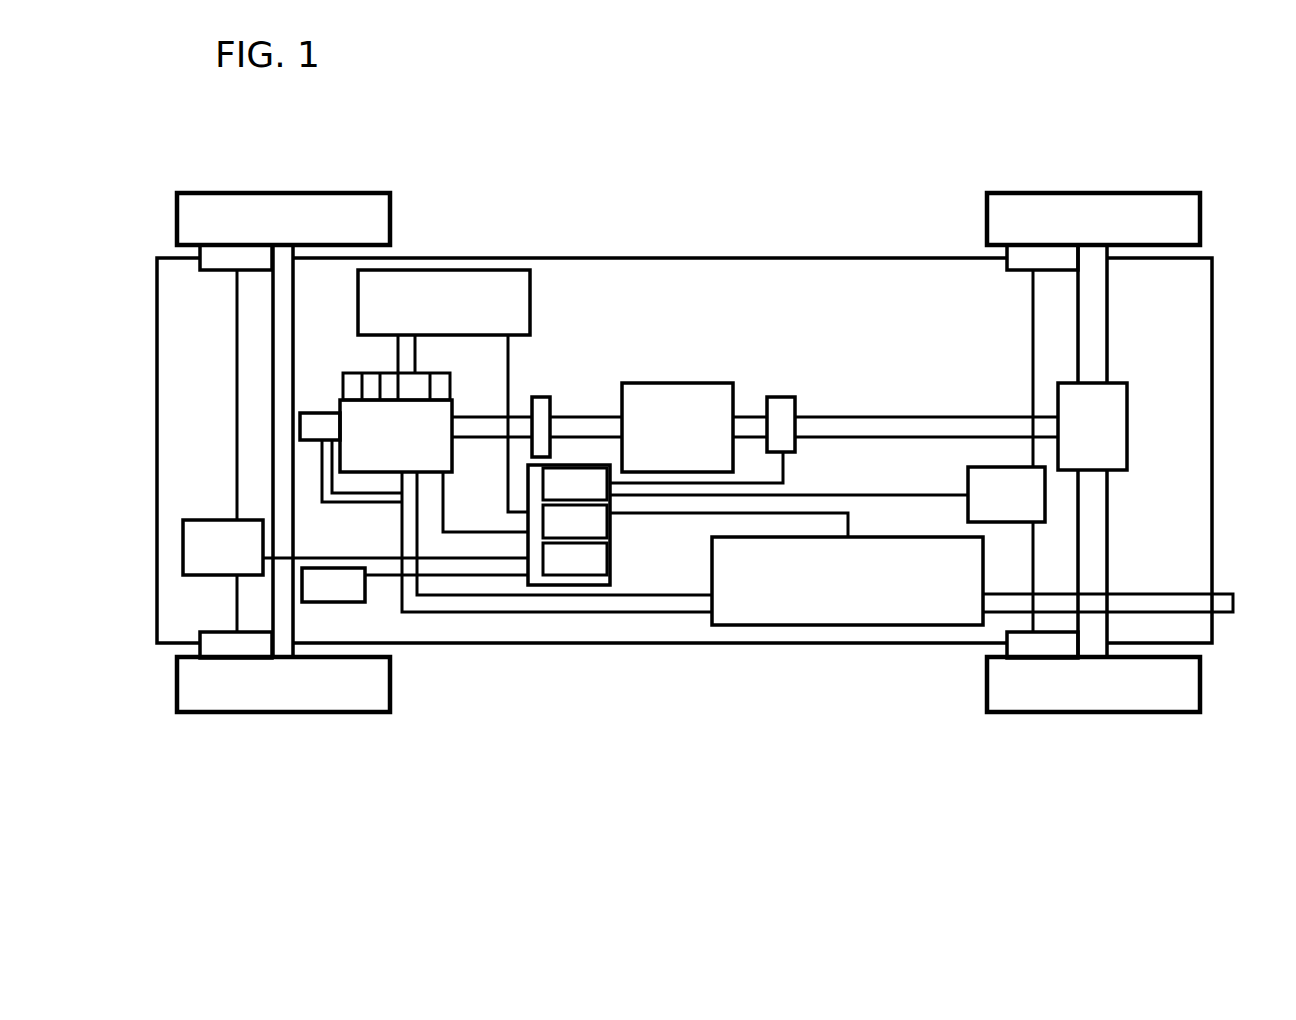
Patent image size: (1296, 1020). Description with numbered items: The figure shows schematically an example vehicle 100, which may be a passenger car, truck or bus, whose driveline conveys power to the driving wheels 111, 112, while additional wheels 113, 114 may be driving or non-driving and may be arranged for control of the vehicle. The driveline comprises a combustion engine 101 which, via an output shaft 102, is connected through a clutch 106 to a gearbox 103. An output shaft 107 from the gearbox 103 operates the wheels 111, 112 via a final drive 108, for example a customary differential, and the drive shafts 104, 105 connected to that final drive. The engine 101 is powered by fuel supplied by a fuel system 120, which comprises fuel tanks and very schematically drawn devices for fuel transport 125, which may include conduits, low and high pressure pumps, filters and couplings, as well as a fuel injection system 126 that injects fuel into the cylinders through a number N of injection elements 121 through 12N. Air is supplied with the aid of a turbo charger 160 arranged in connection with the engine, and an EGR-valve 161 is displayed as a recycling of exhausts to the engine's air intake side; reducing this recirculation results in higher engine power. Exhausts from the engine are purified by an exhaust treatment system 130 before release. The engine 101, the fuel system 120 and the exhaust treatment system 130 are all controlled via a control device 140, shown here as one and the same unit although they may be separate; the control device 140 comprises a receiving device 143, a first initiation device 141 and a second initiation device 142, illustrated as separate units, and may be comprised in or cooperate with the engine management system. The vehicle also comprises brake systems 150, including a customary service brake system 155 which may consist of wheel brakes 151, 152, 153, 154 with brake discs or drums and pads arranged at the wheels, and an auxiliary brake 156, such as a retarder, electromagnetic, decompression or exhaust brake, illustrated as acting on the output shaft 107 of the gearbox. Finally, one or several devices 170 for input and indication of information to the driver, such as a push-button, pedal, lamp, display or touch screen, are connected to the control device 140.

The vehicle 100 is at (597, 100).
The combustion engine 101 is at (375, 472).
The output shaft 102 is at (480, 417).
The gearbox 103 is at (681, 390).
The drive shaft 104 is at (1108, 310).
The drive shaft 105 is at (1108, 568).
The clutch 106 is at (541, 408).
The output shaft 107 is at (838, 417).
The final drive 108 is at (1128, 420).
The driving wheel 111 is at (1201, 684).
The driving wheel 112 is at (1201, 208).
The additional wheel 113 is at (392, 208).
The additional wheel 114 is at (392, 684).
The fuel system 120 is at (543, 305).
The injection element 121 is at (347, 400).
The injection element 12N is at (431, 400).
The devices for fuel transport 125 is at (396, 345).
The fuel injection system 126 is at (345, 388).
The exhaust treatment system 130 is at (862, 627).
The control device 140 is at (686, 573).
The first initiation device 141 is at (575, 484).
The second initiation device 142 is at (695, 521).
The receiving device 143 is at (553, 587).
The brake system 150 is at (219, 494).
The wheel brake 151 is at (1012, 642).
The wheel brake 152 is at (1018, 258).
The wheel brake 153 is at (230, 258).
The wheel brake 154 is at (206, 635).
The service brake system 155 is at (187, 537).
The brake acting on the powertrain 156 is at (782, 397).
The turbo charger 160 is at (300, 418).
The EGR-valve 161 is at (325, 498).
The devices for input and/or indication of information 170 is at (415, 585).